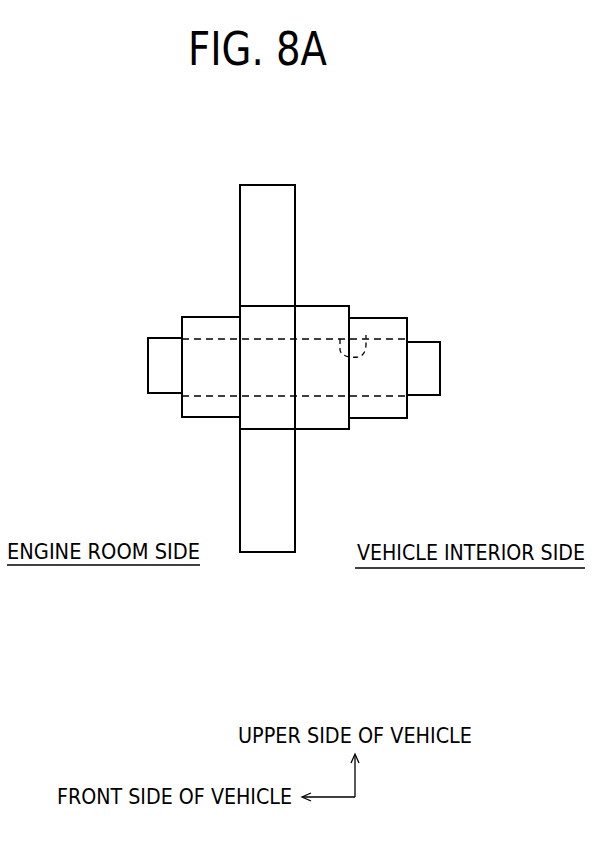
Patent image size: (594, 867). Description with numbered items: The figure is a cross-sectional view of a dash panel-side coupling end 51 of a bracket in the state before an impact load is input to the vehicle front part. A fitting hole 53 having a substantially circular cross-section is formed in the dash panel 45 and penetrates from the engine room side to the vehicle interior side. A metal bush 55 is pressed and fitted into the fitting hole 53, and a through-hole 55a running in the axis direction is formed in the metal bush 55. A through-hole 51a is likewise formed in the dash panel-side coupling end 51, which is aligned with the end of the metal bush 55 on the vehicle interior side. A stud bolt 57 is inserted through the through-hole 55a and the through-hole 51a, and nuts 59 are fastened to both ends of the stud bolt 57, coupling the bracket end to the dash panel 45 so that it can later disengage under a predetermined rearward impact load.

The dash panel 45 is at (263, 193).
The dash panel-side coupling end 51 is at (332, 412).
The through-hole 51a is at (366, 336).
The fitting hole 53 is at (240, 329).
The metal bush 55 is at (271, 320).
The through-hole 55a is at (255, 396).
The stud bolt 57 is at (158, 365).
The nuts 59 is at (197, 413).